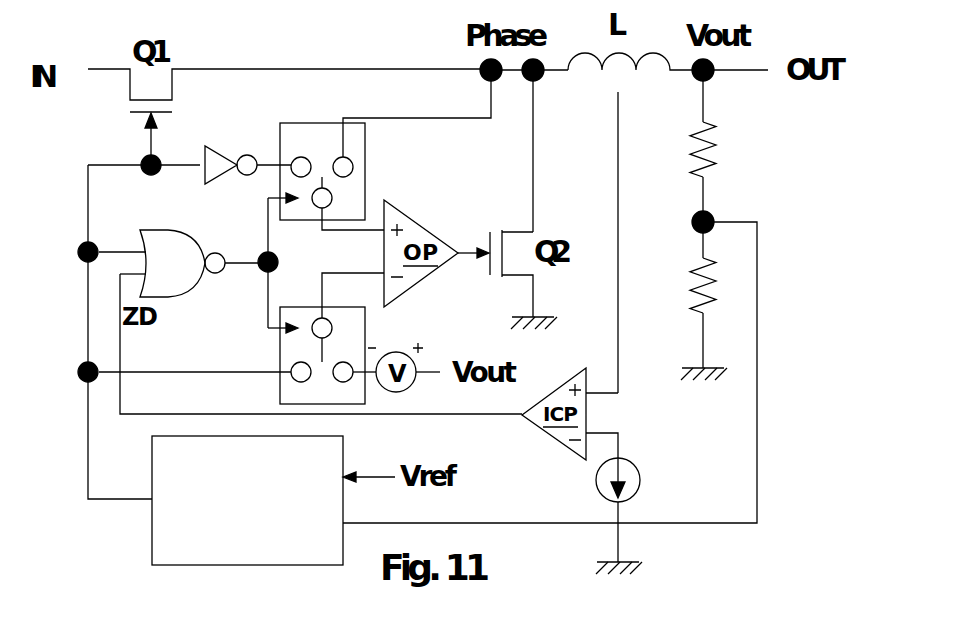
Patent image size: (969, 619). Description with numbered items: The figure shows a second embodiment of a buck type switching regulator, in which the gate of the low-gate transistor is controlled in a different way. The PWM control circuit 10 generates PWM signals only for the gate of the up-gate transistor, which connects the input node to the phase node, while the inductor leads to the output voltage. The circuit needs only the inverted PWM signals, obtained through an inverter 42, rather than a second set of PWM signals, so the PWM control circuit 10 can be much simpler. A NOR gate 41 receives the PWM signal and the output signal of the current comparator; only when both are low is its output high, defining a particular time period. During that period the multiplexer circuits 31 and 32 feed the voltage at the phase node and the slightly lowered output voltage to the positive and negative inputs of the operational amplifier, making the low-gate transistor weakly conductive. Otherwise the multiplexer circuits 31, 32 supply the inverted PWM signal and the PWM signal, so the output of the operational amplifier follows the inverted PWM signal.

The PWM control circuit 10 is at (262, 536).
The multiplexer circuit 31 is at (365, 176).
The multiplexer circuit 32 is at (280, 355).
The NOR gate 41 is at (193, 276).
The inverter 42 is at (213, 159).